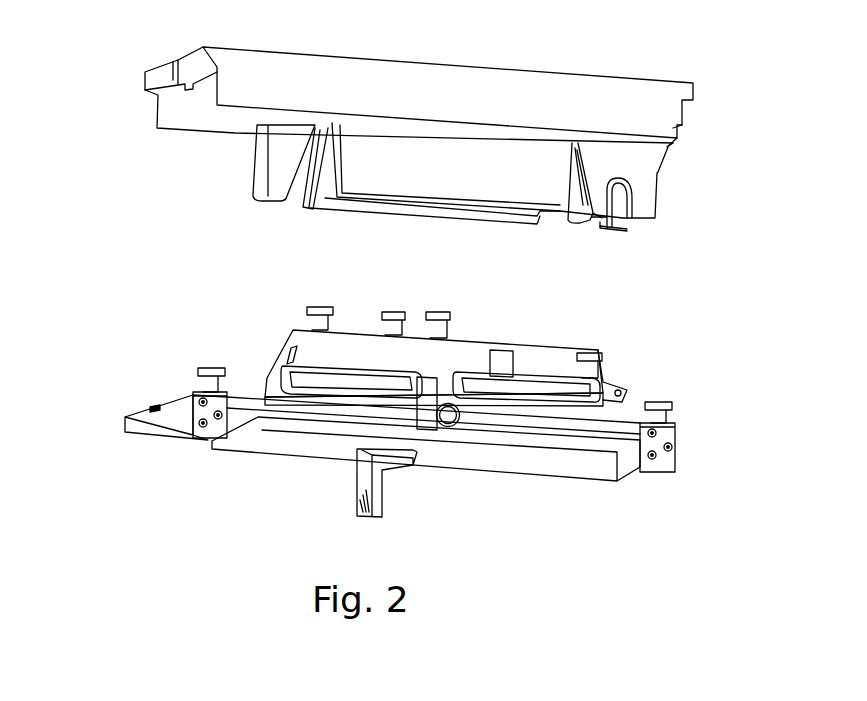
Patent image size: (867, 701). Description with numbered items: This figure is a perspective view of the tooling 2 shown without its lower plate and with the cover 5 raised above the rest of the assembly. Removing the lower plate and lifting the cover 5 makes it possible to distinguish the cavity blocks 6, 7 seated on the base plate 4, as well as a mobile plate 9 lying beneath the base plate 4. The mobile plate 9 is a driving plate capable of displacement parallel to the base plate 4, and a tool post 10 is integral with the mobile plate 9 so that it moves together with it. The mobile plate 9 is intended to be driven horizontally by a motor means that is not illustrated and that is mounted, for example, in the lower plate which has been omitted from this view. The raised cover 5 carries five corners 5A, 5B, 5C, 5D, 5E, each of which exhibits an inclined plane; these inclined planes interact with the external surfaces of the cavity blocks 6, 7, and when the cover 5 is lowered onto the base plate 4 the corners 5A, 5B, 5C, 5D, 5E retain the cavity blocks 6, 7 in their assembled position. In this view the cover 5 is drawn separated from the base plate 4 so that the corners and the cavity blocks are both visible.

The tooling 2 is at (623, 92).
The base plate 4 is at (137, 413).
The cover 5 is at (662, 190).
The corner 5A is at (570, 212).
The corner 5B is at (325, 197).
The corner 5C is at (258, 173).
The corner 5D is at (622, 227).
The corner 5E is at (655, 218).
The cavity block 6 is at (543, 350).
The cavity block 7 is at (290, 345).
The mobile plate 9 is at (243, 443).
The tool post 10 is at (375, 508).